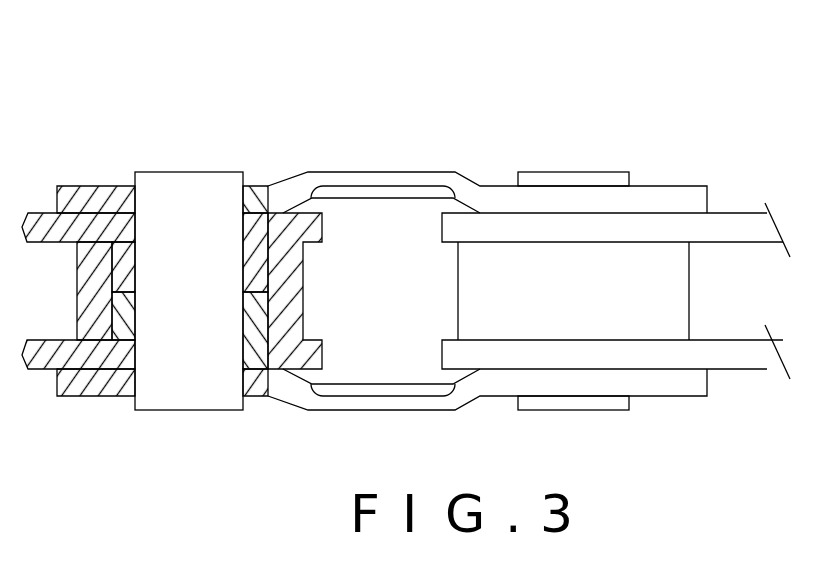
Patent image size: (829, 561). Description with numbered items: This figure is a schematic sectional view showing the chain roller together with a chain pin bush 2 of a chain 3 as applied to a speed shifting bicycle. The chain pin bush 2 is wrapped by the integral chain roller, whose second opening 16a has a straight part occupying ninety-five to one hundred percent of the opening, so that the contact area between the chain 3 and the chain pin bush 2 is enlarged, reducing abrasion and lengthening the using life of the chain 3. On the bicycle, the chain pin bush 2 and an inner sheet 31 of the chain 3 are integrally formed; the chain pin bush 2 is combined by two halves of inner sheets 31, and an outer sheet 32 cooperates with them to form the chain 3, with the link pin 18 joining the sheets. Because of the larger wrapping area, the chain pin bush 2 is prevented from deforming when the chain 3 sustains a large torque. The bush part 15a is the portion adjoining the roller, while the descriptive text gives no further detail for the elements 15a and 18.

The chain pin bush 2 is at (121, 265).
The chain 3 is at (487, 214).
The bushing 15a is at (268, 243).
The second opening 16a is at (108, 262).
The connecting pin 18 is at (292, 327).
The inner sheet 31 is at (312, 233).
The outer sheet 32 is at (462, 187).